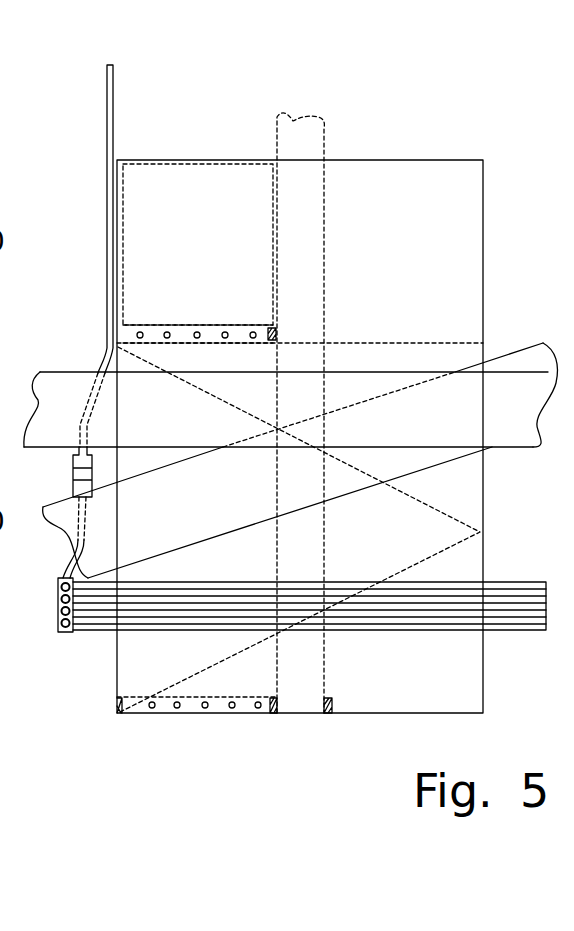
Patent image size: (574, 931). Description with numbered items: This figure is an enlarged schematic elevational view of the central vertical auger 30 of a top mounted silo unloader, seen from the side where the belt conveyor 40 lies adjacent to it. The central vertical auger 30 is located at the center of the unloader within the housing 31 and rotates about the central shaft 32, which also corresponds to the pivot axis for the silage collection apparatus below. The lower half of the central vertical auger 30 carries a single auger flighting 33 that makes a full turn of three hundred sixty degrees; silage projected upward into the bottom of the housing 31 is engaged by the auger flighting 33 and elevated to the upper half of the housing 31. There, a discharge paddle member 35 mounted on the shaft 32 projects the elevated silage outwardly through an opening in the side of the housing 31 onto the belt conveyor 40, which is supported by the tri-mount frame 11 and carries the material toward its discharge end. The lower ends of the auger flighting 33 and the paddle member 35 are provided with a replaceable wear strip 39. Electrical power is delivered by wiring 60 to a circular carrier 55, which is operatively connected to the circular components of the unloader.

The central vertical auger 30 is at (223, 730).
The housing 31 is at (483, 222).
The central shaft 32 is at (313, 143).
The auger flighting 33 is at (440, 507).
The discharge paddle member 35 is at (160, 190).
The replaceable wear strip 39 is at (238, 333).
The belt conveyor 40 is at (512, 352).
The tri-mount frame 11 is at (68, 372).
The circular carrier 55 is at (505, 622).
The wiring 60 is at (105, 172).